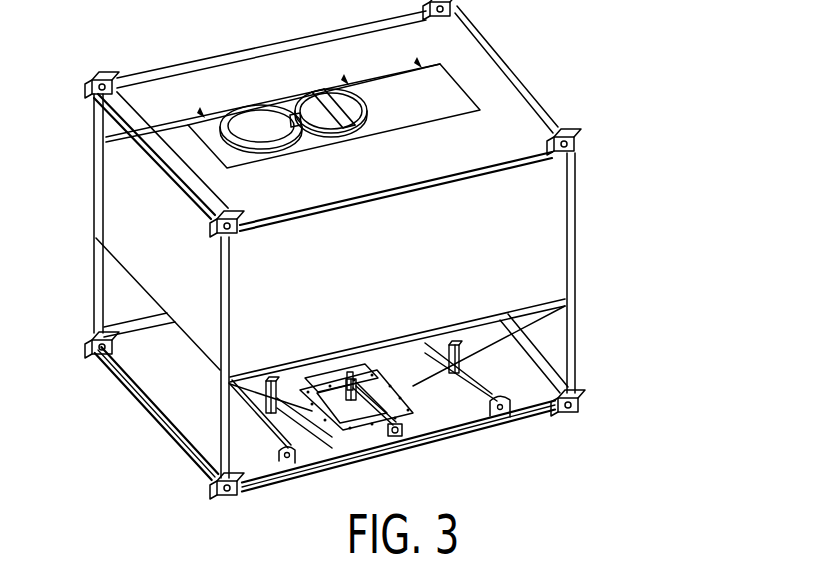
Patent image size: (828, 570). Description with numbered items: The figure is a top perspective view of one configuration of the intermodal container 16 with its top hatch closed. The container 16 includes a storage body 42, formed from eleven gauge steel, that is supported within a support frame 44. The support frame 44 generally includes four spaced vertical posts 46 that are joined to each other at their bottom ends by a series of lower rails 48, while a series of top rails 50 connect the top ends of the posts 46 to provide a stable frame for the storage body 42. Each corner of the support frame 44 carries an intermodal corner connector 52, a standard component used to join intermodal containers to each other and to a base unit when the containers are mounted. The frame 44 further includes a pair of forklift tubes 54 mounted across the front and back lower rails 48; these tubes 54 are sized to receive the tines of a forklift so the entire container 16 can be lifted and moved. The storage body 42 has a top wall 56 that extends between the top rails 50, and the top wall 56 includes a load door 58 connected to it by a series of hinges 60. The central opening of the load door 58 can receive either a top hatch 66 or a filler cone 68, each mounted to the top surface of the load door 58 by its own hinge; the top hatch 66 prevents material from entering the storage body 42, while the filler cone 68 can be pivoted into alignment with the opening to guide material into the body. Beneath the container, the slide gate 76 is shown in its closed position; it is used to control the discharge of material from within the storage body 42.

The intermodal container 16 is at (632, 150).
The storage body 42 is at (563, 236).
The support frame 44 is at (582, 356).
The vertical posts 46 is at (97, 290).
The lower rails 48 is at (537, 352).
The top rails 50 is at (504, 70).
The intermodal corner connector 52 is at (104, 70).
The forklift tubes 54 is at (290, 448).
The top wall 56 is at (281, 62).
The load door 58 is at (396, 89).
The hinges 60 is at (200, 114).
The top hatch 66 is at (368, 114).
The filler cone 68 is at (283, 148).
The slide gate 76 is at (403, 383).